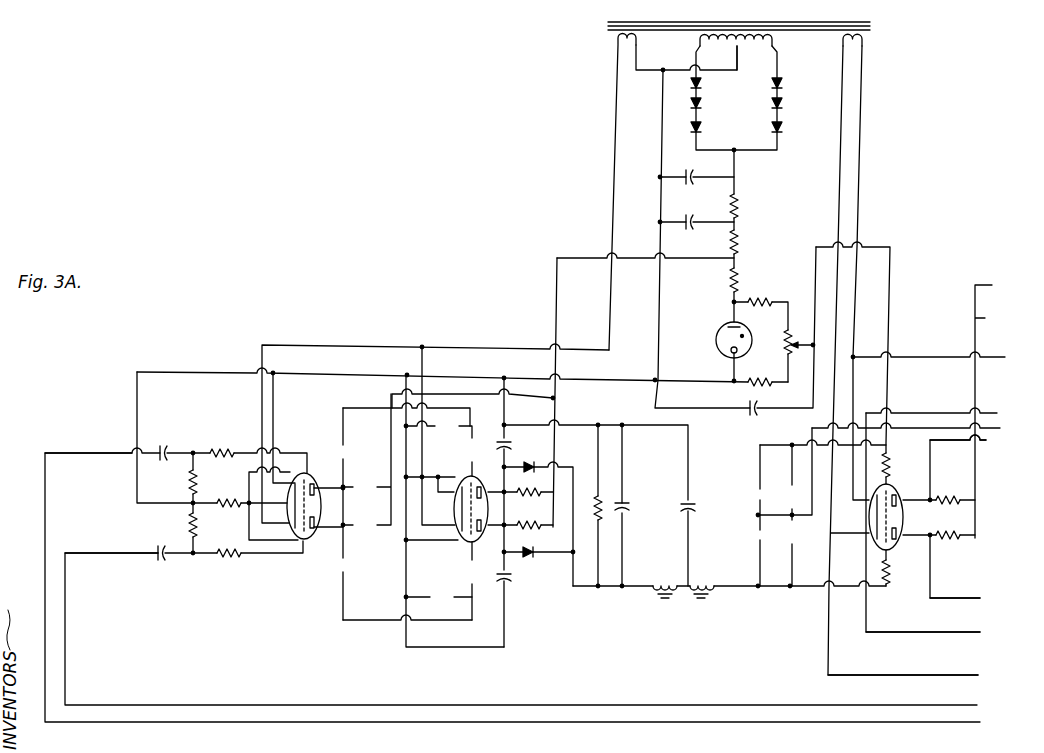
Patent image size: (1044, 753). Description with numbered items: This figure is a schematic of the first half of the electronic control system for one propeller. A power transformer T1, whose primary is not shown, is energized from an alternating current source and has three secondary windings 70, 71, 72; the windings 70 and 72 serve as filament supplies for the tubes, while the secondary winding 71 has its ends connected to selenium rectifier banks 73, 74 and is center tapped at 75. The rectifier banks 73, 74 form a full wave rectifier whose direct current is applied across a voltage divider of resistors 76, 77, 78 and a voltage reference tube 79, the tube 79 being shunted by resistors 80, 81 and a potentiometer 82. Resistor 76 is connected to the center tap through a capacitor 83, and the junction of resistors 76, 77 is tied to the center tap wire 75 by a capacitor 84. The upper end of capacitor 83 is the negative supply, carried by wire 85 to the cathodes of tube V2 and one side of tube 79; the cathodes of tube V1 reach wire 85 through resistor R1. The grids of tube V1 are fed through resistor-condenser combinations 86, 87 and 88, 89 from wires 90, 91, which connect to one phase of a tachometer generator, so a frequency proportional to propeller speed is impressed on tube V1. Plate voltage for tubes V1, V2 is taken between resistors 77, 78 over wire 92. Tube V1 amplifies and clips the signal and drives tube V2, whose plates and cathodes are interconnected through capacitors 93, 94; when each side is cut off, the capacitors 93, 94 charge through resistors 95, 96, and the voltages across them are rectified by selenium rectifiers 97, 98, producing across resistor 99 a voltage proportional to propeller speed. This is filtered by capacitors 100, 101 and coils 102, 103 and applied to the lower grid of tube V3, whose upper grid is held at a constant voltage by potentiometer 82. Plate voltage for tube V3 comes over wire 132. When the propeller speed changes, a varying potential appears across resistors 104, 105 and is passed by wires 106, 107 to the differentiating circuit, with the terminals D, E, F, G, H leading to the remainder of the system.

The power transformer T1 is at (604, 23).
The secondary winding 70 is at (615, 37).
The secondary winding 71 is at (775, 43).
The secondary winding 72 is at (866, 46).
The selenium rectifier bank 73 is at (701, 124).
The selenium rectifier bank 74 is at (782, 106).
The center tap 75 is at (740, 48).
The resistor 76 is at (739, 206).
The resistor 77 is at (740, 240).
The resistor 78 is at (740, 274).
The voltage reference tube 79 is at (713, 345).
The resistor 80 is at (768, 300).
The resistor 81 is at (760, 385).
The potentiometer 82 is at (778, 340).
The capacitor 83 is at (690, 170).
The capacitor 84 is at (692, 215).
The wire 85 is at (660, 127).
The resistor 86 is at (222, 445).
The condenser 87 is at (165, 445).
The resistor 88 is at (232, 558).
The condenser 89 is at (165, 559).
The wire 90 is at (85, 452).
The wire 91 is at (101, 552).
The wire 92 is at (692, 262).
The capacitor 93 is at (502, 442).
The capacitor 94 is at (509, 582).
The resistor 95 is at (530, 498).
The resistor 96 is at (533, 530).
The selenium rectifier 97 is at (536, 458).
The selenium rectifier 98 is at (533, 556).
The resistor 99 is at (590, 500).
The capacitor 100 is at (641, 498).
The capacitor 101 is at (699, 505).
The coil 102 is at (671, 580).
The coil 103 is at (703, 582).
The resistor 104 is at (951, 486).
The resistor 105 is at (955, 530).
The wire 106 is at (959, 592).
The wire 107 is at (986, 443).
The wire 132 is at (1000, 411).
The resistor R1 is at (220, 500).
The tube V1 is at (306, 540).
The tube V2 is at (481, 542).
The tube V3 is at (890, 546).
The terminal D is at (937, 358).
The terminal E is at (989, 415).
The terminal F is at (998, 429).
The terminal G is at (932, 633).
The terminal H is at (913, 677).